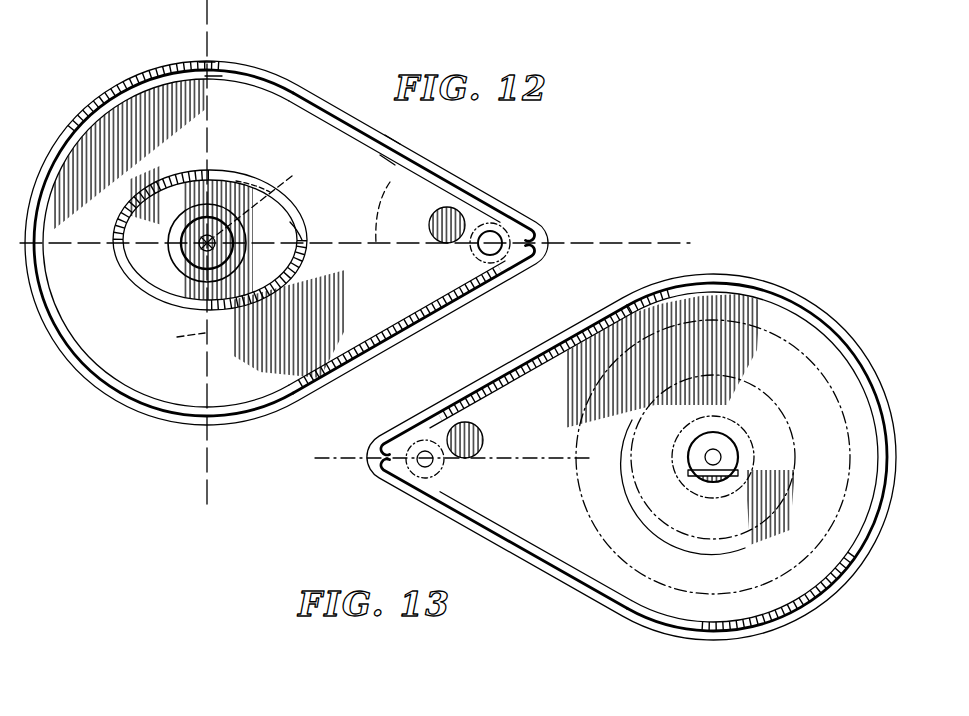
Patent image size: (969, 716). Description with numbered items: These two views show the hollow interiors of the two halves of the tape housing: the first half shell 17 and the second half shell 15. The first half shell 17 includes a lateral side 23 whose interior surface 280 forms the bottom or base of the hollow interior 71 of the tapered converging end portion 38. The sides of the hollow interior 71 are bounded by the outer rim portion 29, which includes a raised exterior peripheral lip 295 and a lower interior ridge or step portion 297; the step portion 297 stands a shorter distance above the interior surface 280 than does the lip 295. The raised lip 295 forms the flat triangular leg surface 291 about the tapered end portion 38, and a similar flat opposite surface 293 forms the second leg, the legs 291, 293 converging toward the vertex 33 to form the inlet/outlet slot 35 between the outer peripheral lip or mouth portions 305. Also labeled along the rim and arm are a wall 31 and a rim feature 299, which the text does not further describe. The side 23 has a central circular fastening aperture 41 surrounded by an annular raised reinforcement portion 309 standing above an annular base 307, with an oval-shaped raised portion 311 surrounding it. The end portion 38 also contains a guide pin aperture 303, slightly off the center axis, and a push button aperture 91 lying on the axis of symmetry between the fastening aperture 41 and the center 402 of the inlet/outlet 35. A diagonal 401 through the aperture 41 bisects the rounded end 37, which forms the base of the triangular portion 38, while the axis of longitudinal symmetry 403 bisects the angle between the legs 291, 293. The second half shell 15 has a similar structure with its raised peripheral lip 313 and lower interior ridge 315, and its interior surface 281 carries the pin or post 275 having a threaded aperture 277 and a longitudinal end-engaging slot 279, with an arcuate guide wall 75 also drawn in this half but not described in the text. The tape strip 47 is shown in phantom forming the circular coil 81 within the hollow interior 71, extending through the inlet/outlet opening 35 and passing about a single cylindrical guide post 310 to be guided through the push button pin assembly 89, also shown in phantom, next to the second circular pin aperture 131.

In FIG. 13, the second half shell 15 is at (862, 337).
In FIG. 12, the first half shell 17 is at (94, 76).
In FIG. 12, the lateral side 23 is at (245, 360).
In FIG. 12, the outer rim portion 29 is at (298, 78).
In FIG. 13, the outer rim portion 29 is at (470, 383).
In FIG. 12, the arm wall 31 is at (379, 352).
In FIG. 13, the arm wall 31 is at (468, 533).
In FIG. 12, the vertex 33 is at (526, 262).
In FIG. 12, the inlet/outlet slot 35 is at (551, 243).
In FIG. 13, the inlet/outlet slot 35 is at (372, 462).
In FIG. 12, the rounded end 37 is at (103, 167).
In FIG. 13, the rounded end 37 is at (871, 425).
In FIG. 12, the tapered converging end portion 38 is at (392, 178).
In FIG. 13, the tapered converging end portion 38 is at (534, 524).
In FIG. 12, the central circular fastening aperture 41 is at (181, 243).
In FIG. 13, the tape strip 47 is at (838, 388).
In FIG. 12, the hollow interior 71 is at (122, 346).
In FIG. 13, the hollow interior 71 is at (638, 328).
In FIG. 13, the arcuate guide wall 75 is at (740, 546).
In FIG. 13, the circular coil 81 is at (782, 330).
In FIG. 13, the push button pin assembly 89 is at (443, 480).
In FIG. 12, the push button aperture 91 is at (501, 232).
In FIG. 13, the second circular pin aperture 131 is at (420, 437).
In FIG. 13, the pin or post 275 is at (716, 440).
In FIG. 13, the threaded aperture 277 is at (709, 451).
In FIG. 13, the longitudinal end-engaging slot 279 is at (742, 492).
In FIG. 12, the interior surface 280 is at (393, 295).
In FIG. 13, the interior surface 281 is at (564, 480).
In FIG. 12, the triangular leg surface 291 is at (394, 140).
In FIG. 12, the opposite surface 293 is at (405, 368).
In FIG. 12, the raised exterior peripheral lip 295 is at (195, 62).
In FIG. 12, the lower interior ridge or step portion 297 is at (212, 76).
In FIG. 12, the serrated rim 299 is at (162, 72).
In FIG. 12, the guide pin aperture 303 is at (452, 209).
In FIG. 12, the outer peripheral lip or mouth portions 305 is at (544, 232).
In FIG. 12, the annular base 307 is at (185, 205).
In FIG. 12, the annular raised lip, rim, or reinforcement portion 309 is at (306, 230).
In FIG. 13, the cylindrical guide post 310 is at (477, 428).
In FIG. 12, the oval-shaped raised portion 311 is at (248, 183).
In FIG. 13, the raised peripheral lip 313 is at (847, 582).
In FIG. 13, the lower interior ridge 315 is at (580, 597).
In FIG. 12, the diagonal 401 is at (382, 196).
In FIG. 12, the center 402 is at (265, 196).
In FIG. 12, the axis of longitudinal symmetry 403 is at (173, 337).